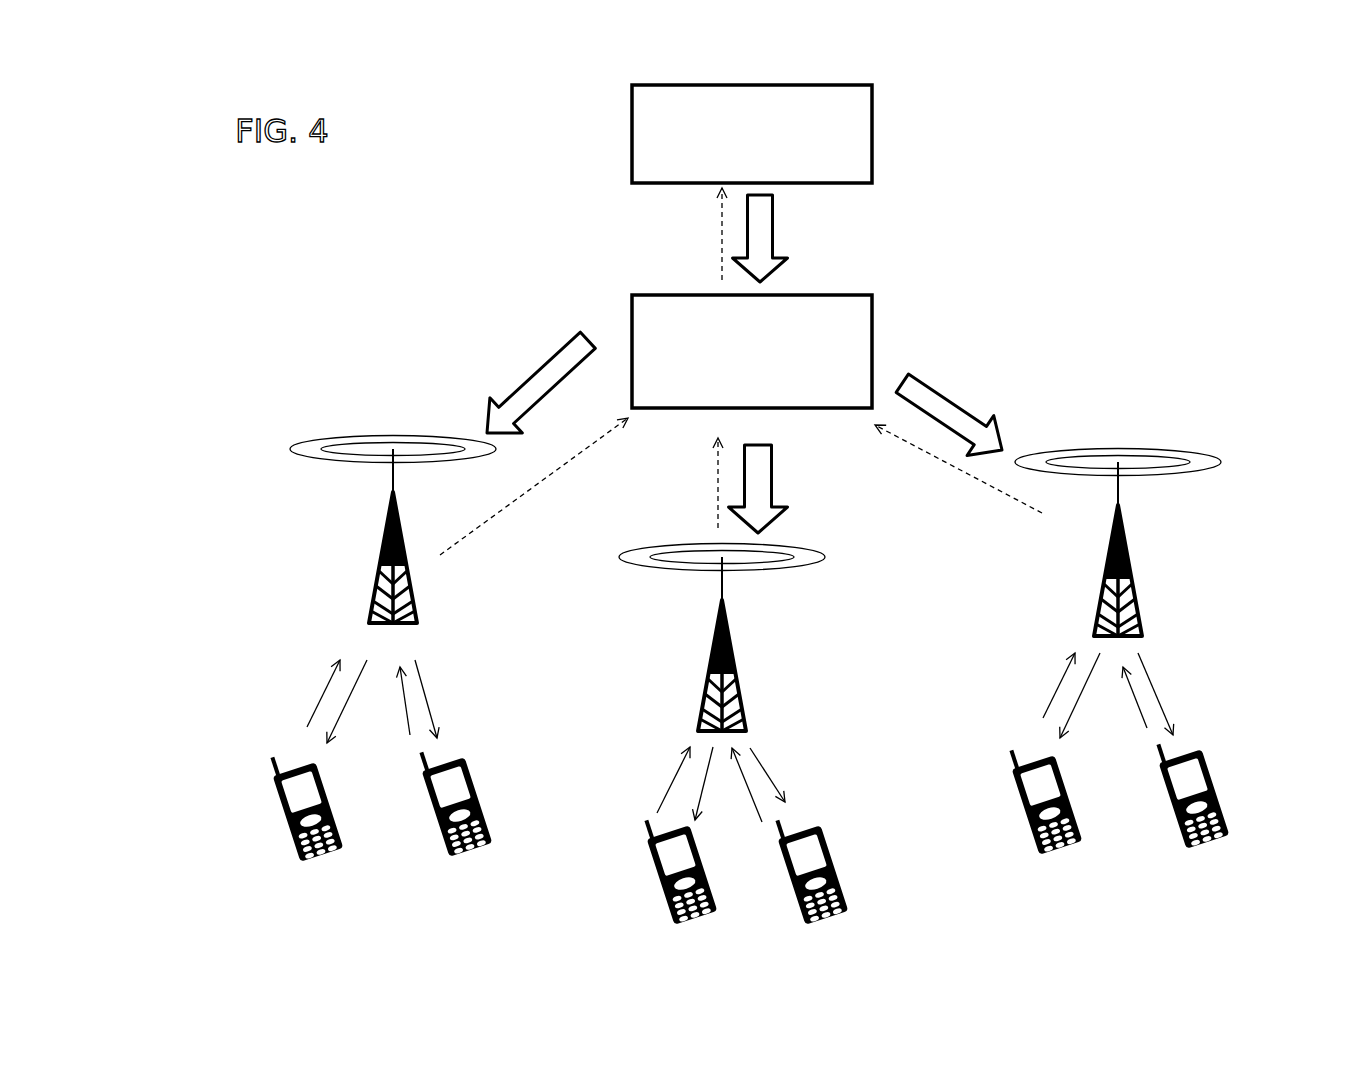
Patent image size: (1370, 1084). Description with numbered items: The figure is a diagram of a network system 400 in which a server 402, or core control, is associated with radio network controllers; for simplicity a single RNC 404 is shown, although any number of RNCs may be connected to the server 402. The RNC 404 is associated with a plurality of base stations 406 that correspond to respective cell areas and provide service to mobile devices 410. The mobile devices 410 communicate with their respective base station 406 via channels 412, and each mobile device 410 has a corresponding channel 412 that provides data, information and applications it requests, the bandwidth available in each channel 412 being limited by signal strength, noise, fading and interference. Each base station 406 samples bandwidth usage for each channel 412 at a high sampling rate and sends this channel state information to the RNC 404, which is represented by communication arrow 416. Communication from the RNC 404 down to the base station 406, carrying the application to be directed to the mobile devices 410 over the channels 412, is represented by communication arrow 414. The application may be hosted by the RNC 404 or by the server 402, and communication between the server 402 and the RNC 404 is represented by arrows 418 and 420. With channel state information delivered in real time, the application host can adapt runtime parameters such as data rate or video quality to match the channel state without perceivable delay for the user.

The network system 400 is at (1062, 180).
The server 402 is at (873, 130).
The radio network controller 404 is at (873, 327).
The base station 406 is at (385, 547).
The mobile device 410 is at (290, 825).
The channel 412 is at (295, 683).
The communication arrow 414 is at (535, 363).
The communication arrow 416 is at (478, 528).
The arrow 418 is at (723, 253).
The arrow 420 is at (775, 232).